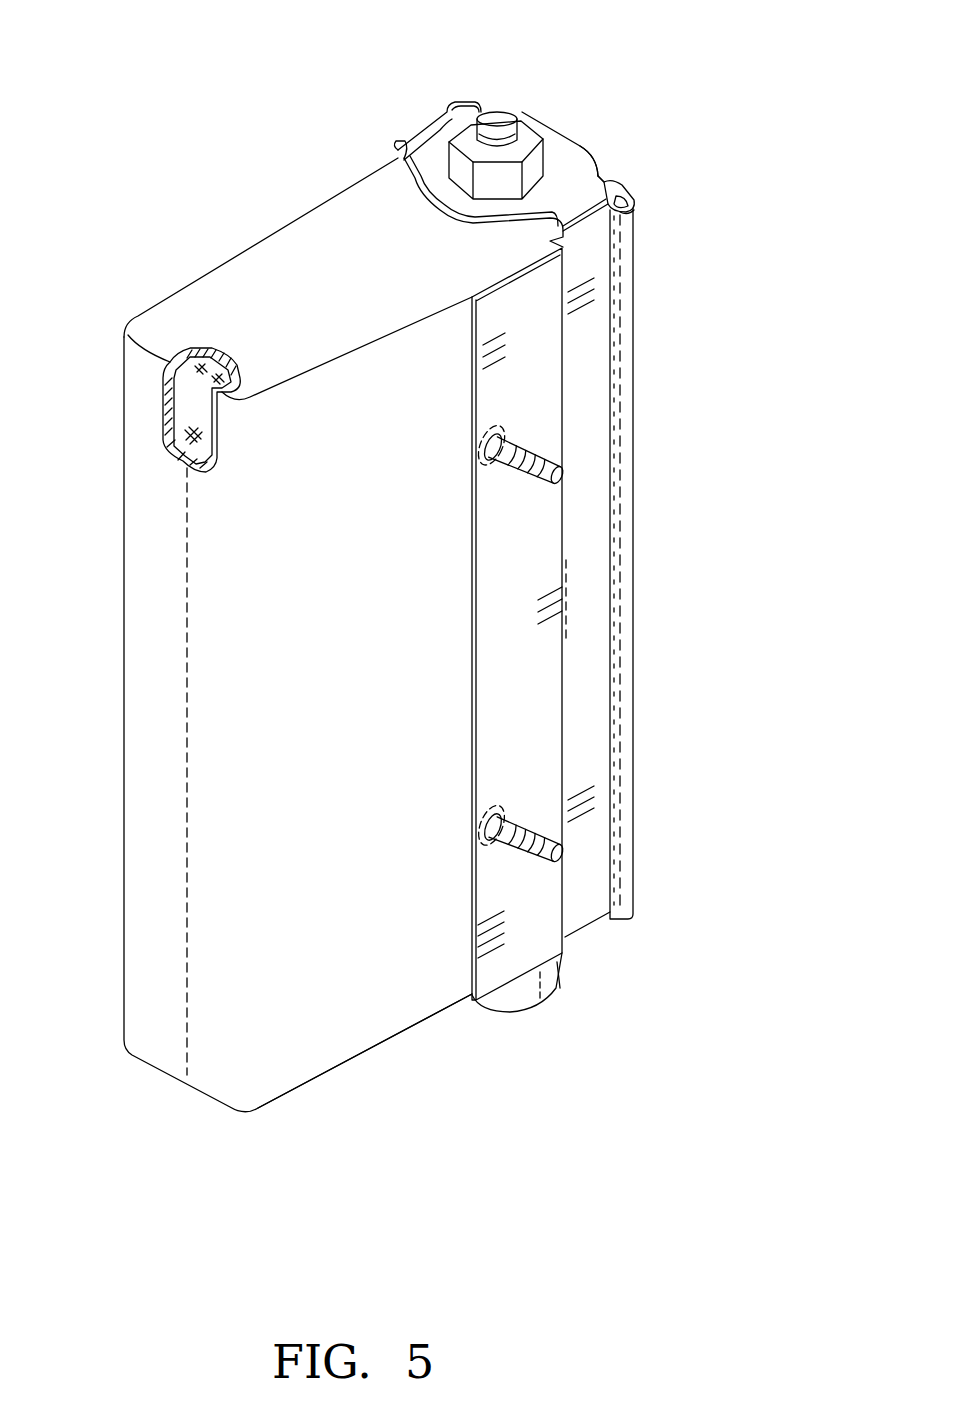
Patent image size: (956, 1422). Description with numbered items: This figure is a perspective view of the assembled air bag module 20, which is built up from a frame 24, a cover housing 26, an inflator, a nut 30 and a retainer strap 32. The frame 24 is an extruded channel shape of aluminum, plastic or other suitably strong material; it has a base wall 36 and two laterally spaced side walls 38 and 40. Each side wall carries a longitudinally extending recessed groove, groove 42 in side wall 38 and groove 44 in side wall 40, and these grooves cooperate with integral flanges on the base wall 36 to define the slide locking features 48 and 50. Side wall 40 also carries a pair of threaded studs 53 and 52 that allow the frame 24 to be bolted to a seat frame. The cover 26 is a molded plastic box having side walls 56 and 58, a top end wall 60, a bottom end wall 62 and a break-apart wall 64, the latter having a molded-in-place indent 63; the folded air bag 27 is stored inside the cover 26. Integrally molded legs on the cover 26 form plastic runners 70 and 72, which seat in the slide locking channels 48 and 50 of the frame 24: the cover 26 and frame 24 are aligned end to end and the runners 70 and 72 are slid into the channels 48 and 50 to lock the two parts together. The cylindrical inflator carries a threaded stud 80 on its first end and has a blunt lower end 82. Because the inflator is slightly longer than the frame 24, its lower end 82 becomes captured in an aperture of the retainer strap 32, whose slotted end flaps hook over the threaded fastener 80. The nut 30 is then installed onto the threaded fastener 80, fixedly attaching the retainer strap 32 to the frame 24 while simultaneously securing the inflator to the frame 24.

The air bag module 20 is at (398, 580).
The frame 24 is at (681, 185).
The cover housing 26 is at (314, 636).
The air bag 27 is at (139, 410).
The nut 30 is at (538, 158).
The retainer strap 32 is at (522, 557).
The base wall 36 is at (607, 170).
The side wall 38 is at (390, 148).
The side wall 40 is at (488, 290).
The recessed groove 42 is at (422, 127).
The recessed groove 44 is at (681, 525).
The slide locking feature 48 is at (481, 84).
The slide locking feature 50 is at (623, 180).
The threaded stud 52 is at (548, 853).
The threaded stud 53 is at (535, 448).
The side wall 56 is at (228, 260).
The side wall 58 is at (310, 408).
The top end wall 60 is at (361, 260).
The bottom end wall 62 is at (297, 1092).
The indent 63 is at (180, 443).
The break-apart wall 64 is at (251, 748).
The runner 70 is at (470, 96).
The runner 72 is at (640, 212).
The threaded stud 80 is at (515, 73).
The lower blunt end 82 is at (515, 1000).